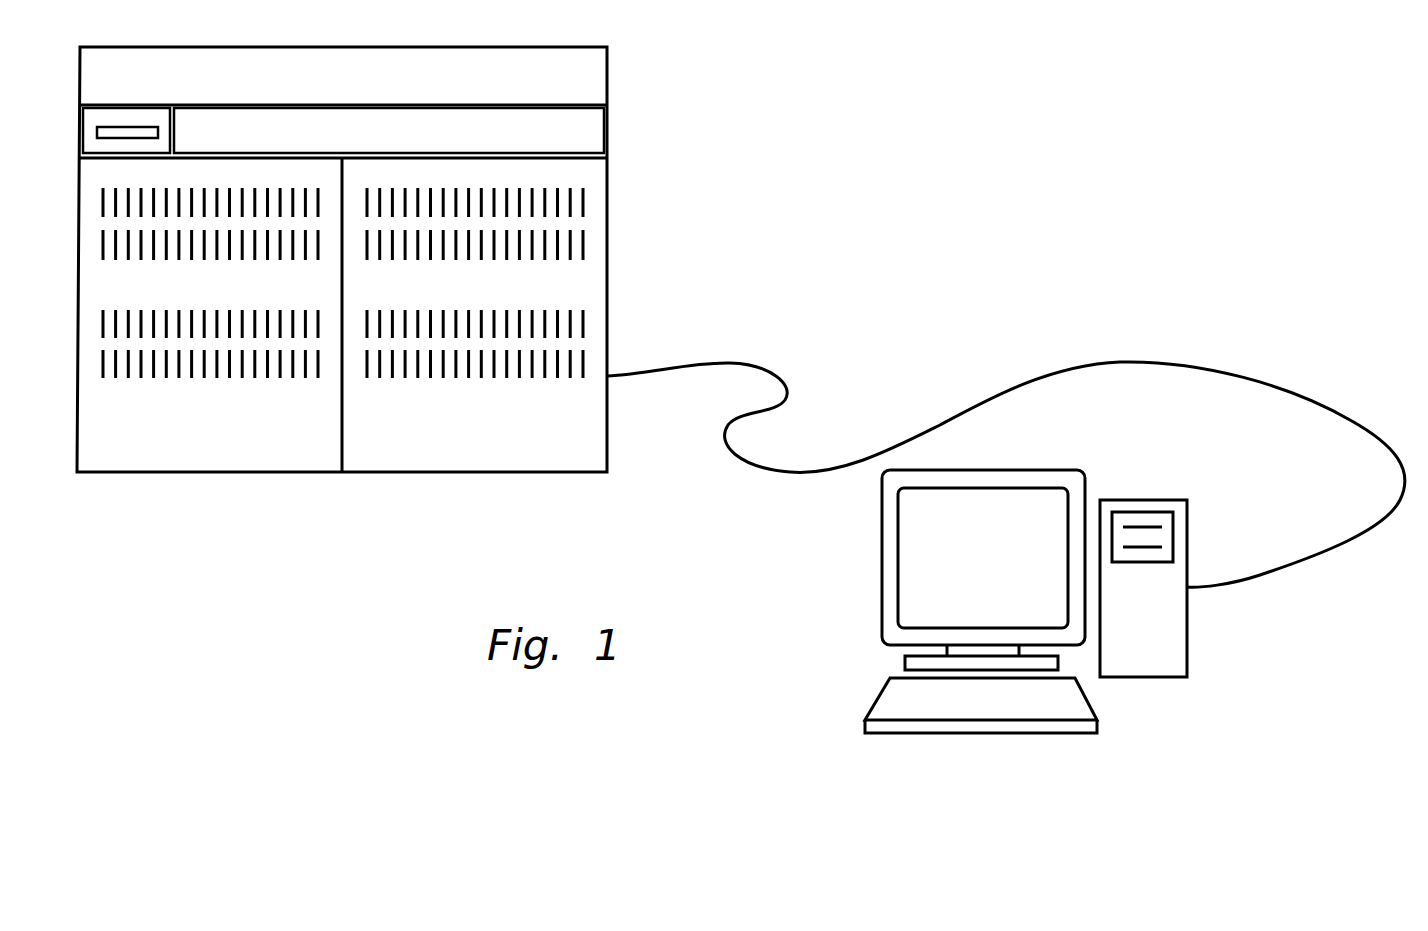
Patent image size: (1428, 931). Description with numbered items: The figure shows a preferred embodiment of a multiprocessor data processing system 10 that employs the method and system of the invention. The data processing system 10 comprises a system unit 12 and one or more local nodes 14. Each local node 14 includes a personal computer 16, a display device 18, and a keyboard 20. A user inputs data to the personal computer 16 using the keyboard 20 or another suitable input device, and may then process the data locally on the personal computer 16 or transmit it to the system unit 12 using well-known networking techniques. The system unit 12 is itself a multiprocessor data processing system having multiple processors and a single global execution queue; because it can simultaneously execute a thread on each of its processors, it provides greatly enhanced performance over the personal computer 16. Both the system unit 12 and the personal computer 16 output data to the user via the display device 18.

The data processing system 10 is at (792, 176).
The system unit 12 is at (607, 225).
The local node 14 is at (1039, 638).
The personal computer 16 is at (1187, 510).
The display device 18 is at (1046, 498).
The keyboard 20 is at (896, 706).